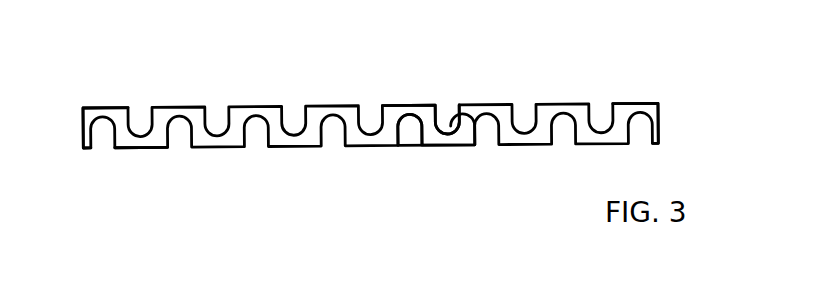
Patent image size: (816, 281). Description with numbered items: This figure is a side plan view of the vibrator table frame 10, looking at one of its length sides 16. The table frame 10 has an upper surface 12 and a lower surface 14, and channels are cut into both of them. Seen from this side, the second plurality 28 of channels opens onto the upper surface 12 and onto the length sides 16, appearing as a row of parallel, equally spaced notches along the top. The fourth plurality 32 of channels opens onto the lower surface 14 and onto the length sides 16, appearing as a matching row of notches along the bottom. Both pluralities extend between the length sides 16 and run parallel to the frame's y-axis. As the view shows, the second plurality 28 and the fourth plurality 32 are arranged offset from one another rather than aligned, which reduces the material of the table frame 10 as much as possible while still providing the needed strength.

The table frame 10 is at (659, 88).
The upper surface 12 is at (180, 108).
The lower surface 14 is at (142, 148).
The length sides 16 is at (105, 110).
The second plurality of channels 28 is at (448, 113).
The fourth plurality of channels 32 is at (485, 137).